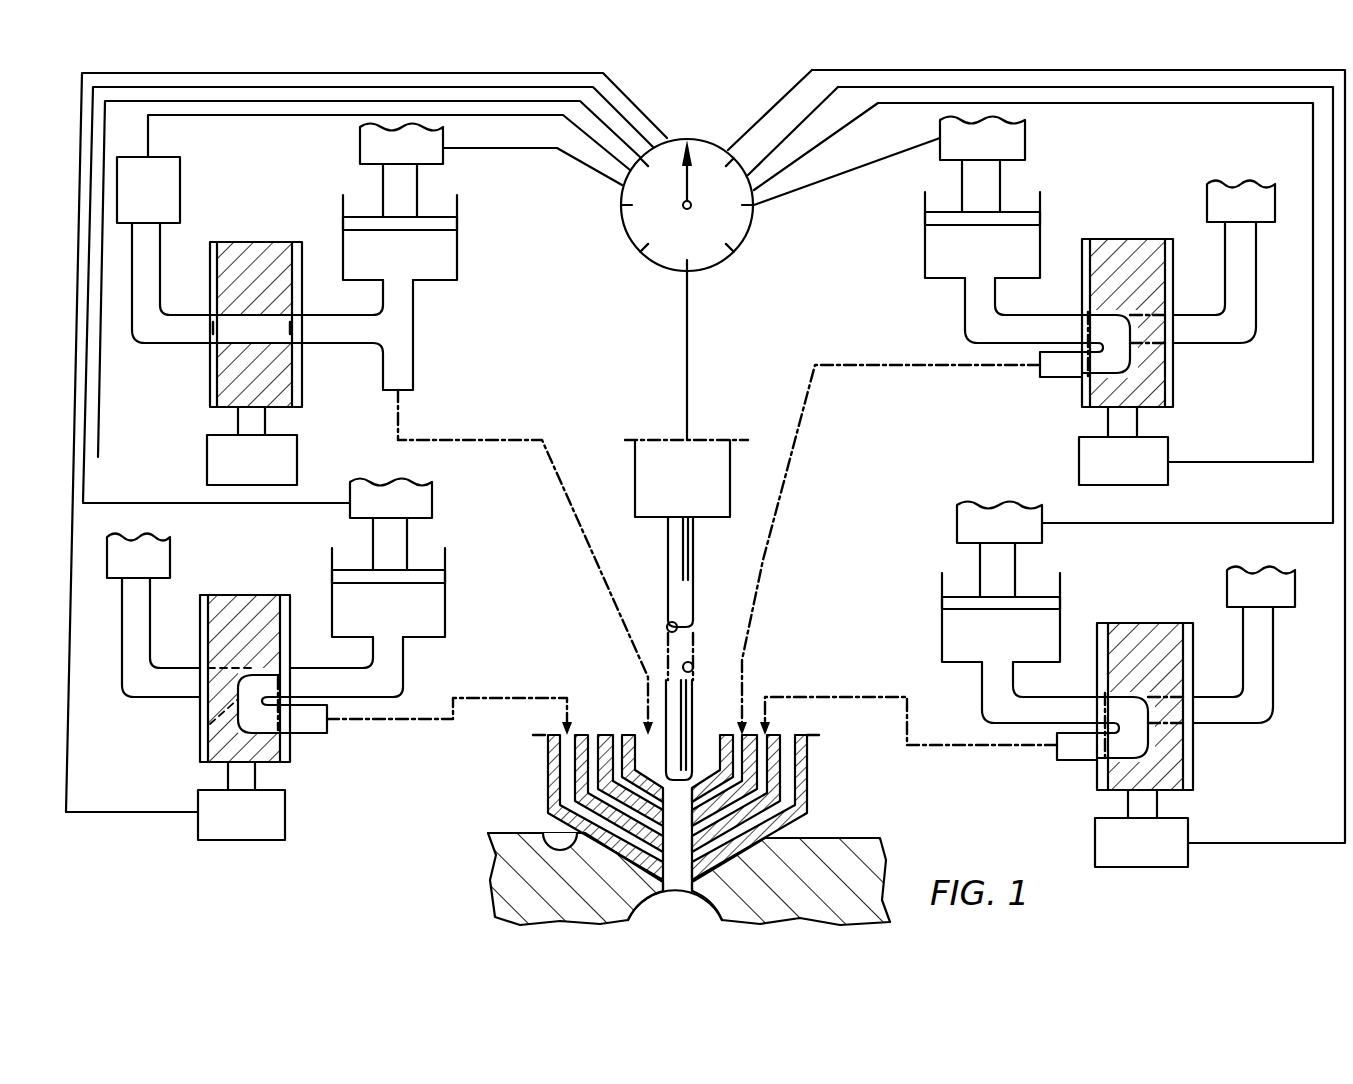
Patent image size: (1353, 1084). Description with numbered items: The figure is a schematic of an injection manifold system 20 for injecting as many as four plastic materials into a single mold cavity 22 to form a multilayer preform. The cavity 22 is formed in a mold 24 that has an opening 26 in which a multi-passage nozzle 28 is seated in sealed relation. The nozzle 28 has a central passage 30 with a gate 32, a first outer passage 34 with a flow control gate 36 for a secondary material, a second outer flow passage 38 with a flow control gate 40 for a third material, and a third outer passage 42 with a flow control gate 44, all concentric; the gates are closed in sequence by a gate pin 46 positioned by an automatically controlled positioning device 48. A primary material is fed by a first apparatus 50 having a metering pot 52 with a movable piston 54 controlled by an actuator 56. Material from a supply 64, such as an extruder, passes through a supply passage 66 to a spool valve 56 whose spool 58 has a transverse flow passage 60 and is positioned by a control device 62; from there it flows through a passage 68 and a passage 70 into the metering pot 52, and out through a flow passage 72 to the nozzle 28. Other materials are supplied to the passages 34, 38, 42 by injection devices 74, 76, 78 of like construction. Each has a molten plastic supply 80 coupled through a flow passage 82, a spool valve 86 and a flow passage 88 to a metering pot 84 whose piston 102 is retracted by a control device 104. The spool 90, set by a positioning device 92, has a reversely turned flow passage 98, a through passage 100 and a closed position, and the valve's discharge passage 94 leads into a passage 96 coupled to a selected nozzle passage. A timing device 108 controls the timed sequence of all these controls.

The injection manifold system 20 is at (687, 255).
The mold cavity 22 is at (705, 912).
The mold 24 is at (563, 862).
The opening 26 is at (544, 832).
The multi-passage nozzle 28 is at (699, 786).
The central passage 30 is at (705, 750).
The gate 32 is at (663, 788).
The first outer passage 34 is at (617, 738).
The flow control gate 36 is at (666, 824).
The second outer flow passage 38 is at (594, 733).
The flow control gate 40 is at (665, 850).
The third outer passage 42 is at (788, 744).
The flow control gate 44 is at (664, 880).
The gate pin 46 is at (691, 670).
The positioning device 48 is at (706, 505).
The first apparatus 50 is at (309, 305).
The metering pot 52 is at (422, 237).
The movable piston 54 is at (393, 228).
The actuator / spool valve 56 is at (360, 148).
The spool 58 is at (270, 295).
The transverse flow passage 60 is at (272, 346).
The control device 62 is at (293, 452).
The supply 64 is at (181, 188).
The supply passage 66 is at (157, 336).
The passage 68 is at (333, 325).
The passage 70 is at (413, 352).
The flow passage 72 is at (568, 492).
The injection device 74 is at (301, 660).
The injection device 76 is at (1078, 200).
The injection device 78 is at (1104, 608).
The molten plastic supply 80 is at (170, 562).
The flow passage 82 is at (156, 696).
The metering pot 84 is at (414, 587).
The spool valve 86 is at (238, 655).
The flow passage 88 is at (401, 685).
The spool 90 is at (205, 639).
The positioning device 92 is at (285, 813).
The discharge passage 94 is at (320, 736).
The passage 96 is at (530, 698).
The reversely turned flow passage 98 is at (258, 672).
The through passage 100 is at (208, 733).
The piston 102 is at (440, 578).
The control device 104 is at (432, 506).
The timing device 108 is at (706, 160).